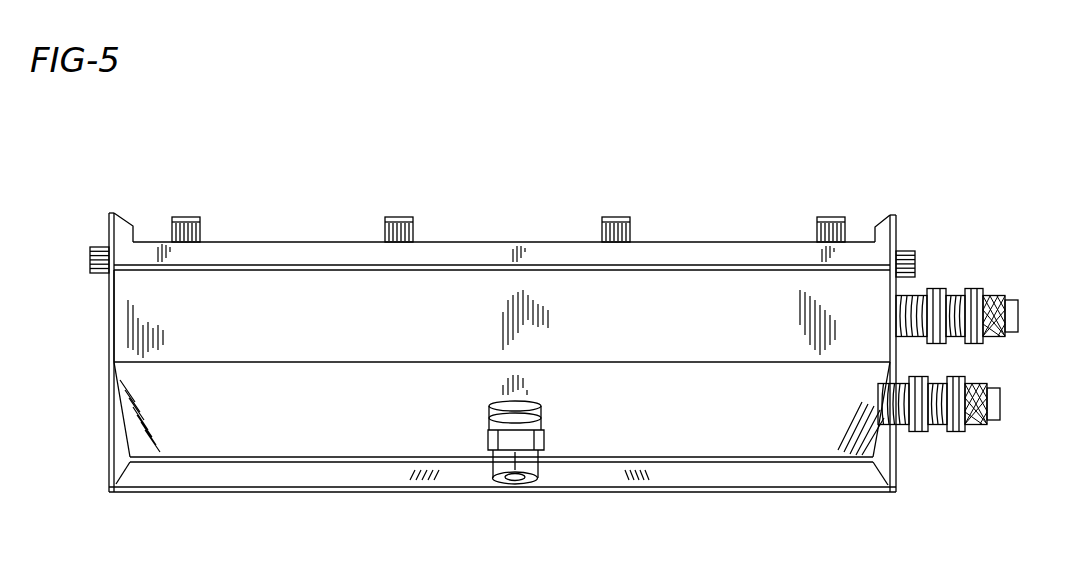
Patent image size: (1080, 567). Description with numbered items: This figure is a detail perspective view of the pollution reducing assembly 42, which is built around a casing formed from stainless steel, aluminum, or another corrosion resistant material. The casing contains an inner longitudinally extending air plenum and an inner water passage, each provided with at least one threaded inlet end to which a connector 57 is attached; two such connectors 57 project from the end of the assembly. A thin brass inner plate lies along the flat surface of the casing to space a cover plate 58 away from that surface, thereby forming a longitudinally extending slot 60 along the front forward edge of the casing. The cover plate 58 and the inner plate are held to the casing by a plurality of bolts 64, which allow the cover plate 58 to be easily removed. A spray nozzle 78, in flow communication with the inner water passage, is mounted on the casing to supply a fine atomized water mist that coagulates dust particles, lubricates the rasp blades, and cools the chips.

The pollution reducing assembly 42 is at (912, 228).
The connector 57 is at (990, 292).
The cover plate 58 is at (675, 241).
The longitudinally extending slot 60 is at (210, 268).
The bolts 64 is at (418, 228).
The spray nozzle 78 is at (490, 470).